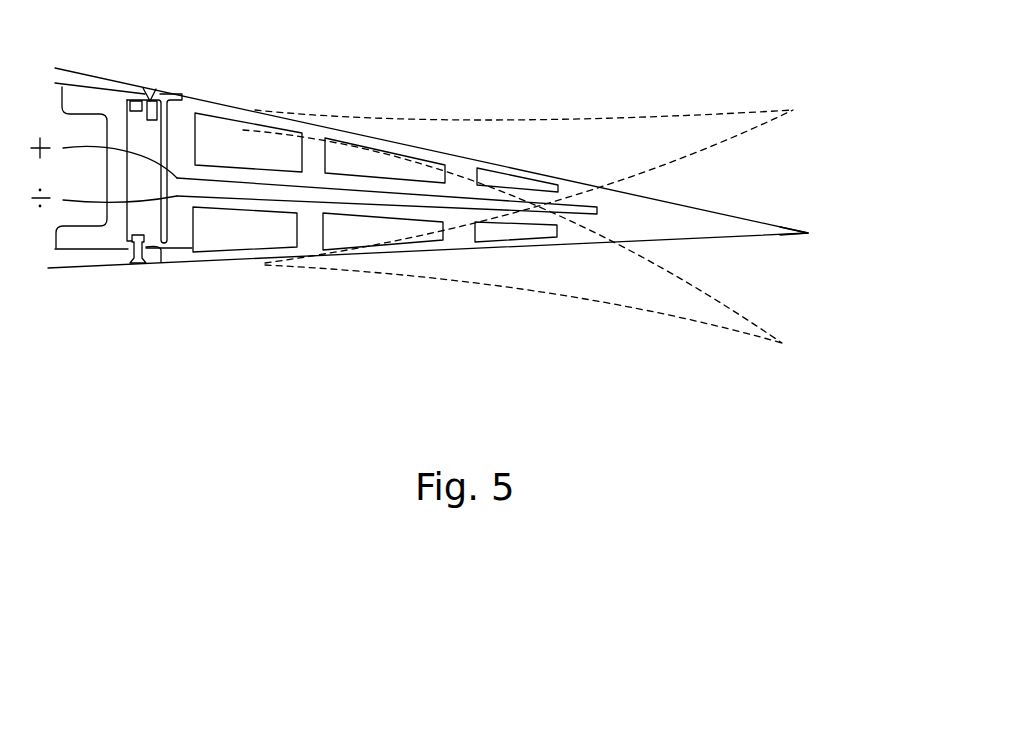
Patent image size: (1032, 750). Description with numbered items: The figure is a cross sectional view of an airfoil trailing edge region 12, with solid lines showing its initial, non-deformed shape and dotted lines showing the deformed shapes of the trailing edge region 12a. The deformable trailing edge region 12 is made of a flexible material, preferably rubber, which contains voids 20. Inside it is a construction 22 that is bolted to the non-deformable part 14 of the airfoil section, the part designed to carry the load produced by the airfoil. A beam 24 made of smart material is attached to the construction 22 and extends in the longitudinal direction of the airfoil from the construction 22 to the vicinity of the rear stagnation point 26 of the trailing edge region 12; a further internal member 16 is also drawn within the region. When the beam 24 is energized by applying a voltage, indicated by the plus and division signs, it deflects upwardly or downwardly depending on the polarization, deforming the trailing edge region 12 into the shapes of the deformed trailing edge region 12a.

The trailing edge region 12 is at (762, 200).
The deformed trailing edge region 12a is at (690, 98).
The non-deformable part 14 is at (110, 53).
The central spar 16 is at (458, 188).
The voids 20 is at (243, 150).
The construction 22 is at (165, 131).
The beam 24 is at (307, 195).
The rear stagnation point 26 is at (818, 255).